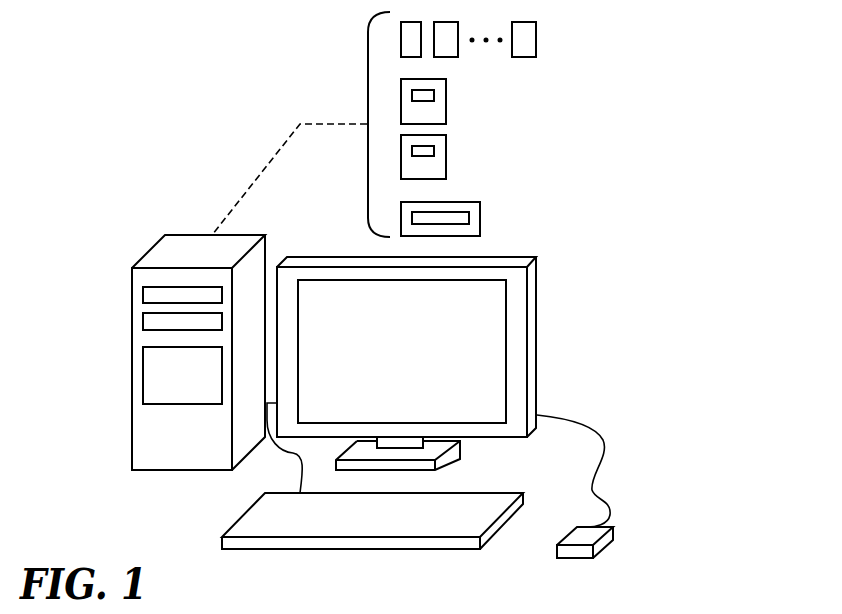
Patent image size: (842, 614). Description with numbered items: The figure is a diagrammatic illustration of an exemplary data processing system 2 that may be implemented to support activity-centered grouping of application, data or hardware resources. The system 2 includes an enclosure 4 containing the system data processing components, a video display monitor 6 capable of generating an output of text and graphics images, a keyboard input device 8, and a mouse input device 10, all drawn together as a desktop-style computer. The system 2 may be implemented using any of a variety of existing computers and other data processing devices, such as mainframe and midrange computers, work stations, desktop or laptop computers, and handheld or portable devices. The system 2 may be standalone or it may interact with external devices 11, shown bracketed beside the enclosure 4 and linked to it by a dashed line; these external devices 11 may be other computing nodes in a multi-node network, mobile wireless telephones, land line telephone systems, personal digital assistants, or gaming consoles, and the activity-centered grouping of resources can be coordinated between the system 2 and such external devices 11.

The data processing system 2 is at (135, 198).
The enclosure 4 is at (140, 412).
The video display monitor 6 is at (530, 313).
The keyboard input device 8 is at (363, 543).
The mouse input device 10 is at (576, 555).
The external devices 11 is at (315, 97).